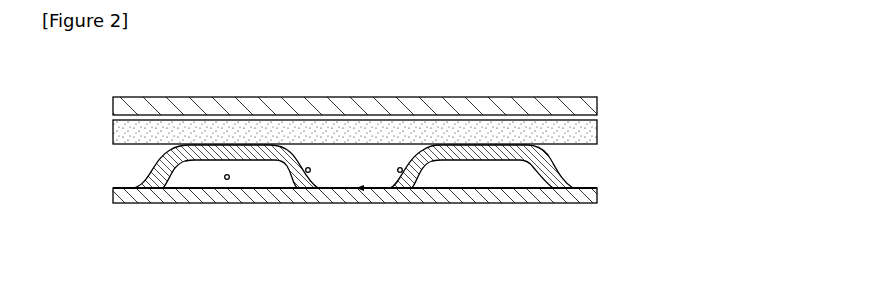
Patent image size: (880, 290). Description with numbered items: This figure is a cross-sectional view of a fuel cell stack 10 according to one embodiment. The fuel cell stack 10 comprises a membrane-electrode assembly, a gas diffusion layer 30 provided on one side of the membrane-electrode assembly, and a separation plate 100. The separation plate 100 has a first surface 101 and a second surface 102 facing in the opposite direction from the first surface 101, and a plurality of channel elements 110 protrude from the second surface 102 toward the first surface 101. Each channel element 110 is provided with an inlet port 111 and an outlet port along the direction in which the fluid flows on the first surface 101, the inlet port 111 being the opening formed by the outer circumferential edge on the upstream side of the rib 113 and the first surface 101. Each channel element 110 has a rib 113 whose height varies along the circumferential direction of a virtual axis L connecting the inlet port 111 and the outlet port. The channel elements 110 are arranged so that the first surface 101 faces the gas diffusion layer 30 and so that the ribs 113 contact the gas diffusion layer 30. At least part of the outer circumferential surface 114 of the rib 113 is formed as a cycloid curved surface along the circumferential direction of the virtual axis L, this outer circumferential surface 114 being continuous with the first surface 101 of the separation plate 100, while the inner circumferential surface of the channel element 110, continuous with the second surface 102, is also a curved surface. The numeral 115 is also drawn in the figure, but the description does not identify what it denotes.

The fuel cell stack 10 is at (647, 60).
The gas diffusion layer 30 is at (598, 104).
The separation plate 100 is at (562, 241).
The first surface 101 is at (598, 186).
The second surface 102 is at (557, 192).
The channel element 110 is at (139, 167).
The inlet port 111 is at (247, 171).
The rib 113 is at (185, 163).
The outer circumferential surface 114 is at (310, 168).
The bottom surface 115 is at (485, 163).
The virtual axis L is at (227, 174).